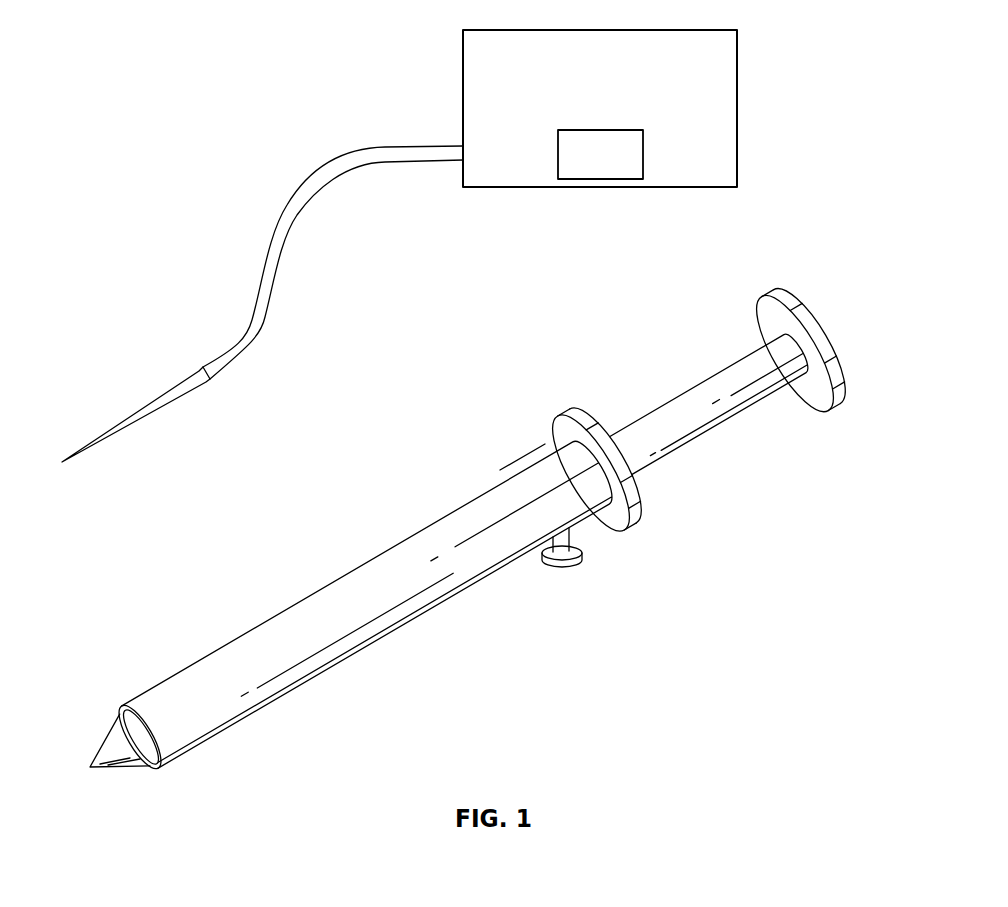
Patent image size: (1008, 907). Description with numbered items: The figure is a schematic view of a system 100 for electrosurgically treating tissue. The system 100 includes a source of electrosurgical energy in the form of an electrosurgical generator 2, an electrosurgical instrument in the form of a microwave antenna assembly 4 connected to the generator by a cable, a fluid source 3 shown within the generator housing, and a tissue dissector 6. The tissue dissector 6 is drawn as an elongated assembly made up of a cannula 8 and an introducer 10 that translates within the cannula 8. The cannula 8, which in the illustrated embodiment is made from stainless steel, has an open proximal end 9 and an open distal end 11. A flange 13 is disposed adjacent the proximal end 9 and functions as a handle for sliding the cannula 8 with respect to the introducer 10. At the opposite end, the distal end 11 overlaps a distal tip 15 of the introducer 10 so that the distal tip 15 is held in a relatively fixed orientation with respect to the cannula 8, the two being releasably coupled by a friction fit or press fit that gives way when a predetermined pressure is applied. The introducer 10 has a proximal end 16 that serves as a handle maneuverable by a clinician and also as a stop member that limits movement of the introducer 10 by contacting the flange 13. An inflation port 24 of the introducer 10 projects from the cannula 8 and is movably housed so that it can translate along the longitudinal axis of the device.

The system 100 is at (793, 60).
The electrosurgical generator 2 is at (683, 29).
The fluid source 3 is at (630, 130).
The microwave antenna assembly 4 is at (135, 396).
The tissue dissector 6 is at (778, 512).
The cannula 8 is at (482, 492).
The open proximal end 9 is at (543, 450).
The introducer 10 is at (710, 420).
The distal end 11 is at (128, 703).
The flange 13 is at (580, 413).
The distal tip 15 is at (110, 740).
The proximal end 16 is at (785, 293).
The inflation port 24 is at (590, 560).